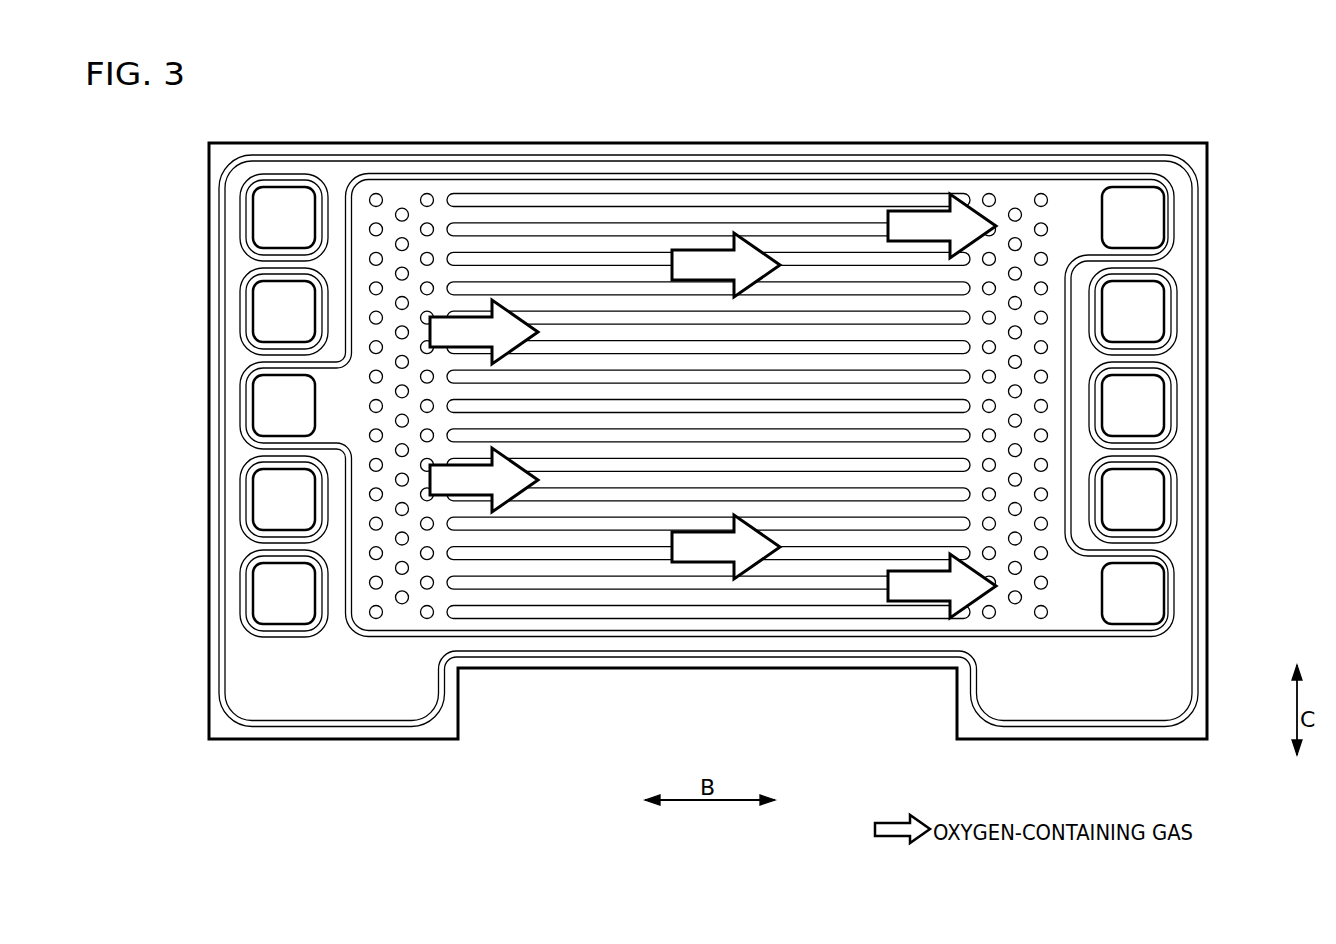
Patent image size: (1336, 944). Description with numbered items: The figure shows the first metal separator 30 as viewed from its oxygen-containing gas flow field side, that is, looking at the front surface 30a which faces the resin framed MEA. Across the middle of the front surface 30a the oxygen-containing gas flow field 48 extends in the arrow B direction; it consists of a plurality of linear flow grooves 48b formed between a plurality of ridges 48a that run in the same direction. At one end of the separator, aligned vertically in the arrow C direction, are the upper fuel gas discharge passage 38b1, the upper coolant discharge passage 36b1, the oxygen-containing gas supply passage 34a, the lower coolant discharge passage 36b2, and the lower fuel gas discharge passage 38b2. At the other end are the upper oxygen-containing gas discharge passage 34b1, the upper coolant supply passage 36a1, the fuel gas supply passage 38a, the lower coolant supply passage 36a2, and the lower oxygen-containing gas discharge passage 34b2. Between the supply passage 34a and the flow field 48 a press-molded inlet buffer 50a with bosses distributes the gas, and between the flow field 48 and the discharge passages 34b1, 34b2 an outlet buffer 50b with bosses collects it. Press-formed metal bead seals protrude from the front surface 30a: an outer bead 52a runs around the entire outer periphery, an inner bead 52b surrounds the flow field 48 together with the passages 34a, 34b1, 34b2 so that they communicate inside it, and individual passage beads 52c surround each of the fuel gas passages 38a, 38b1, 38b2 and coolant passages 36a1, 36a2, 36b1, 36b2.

The first metal separator 30 is at (249, 111).
The front surface 30a is at (977, 193).
The oxygen-containing gas flow field 48 is at (708, 343).
The ridges 48a is at (593, 227).
The linear flow grooves 48b is at (652, 243).
The inlet buffer 50a is at (402, 212).
The outlet buffer 50b is at (1015, 212).
The outer bead 52a is at (805, 650).
The inner bead 52b is at (533, 632).
The passage beads 52c is at (240, 200).
The oxygen-containing gas supply passage 34a is at (267, 398).
The upper oxygen-containing gas discharge passage 34b1 is at (1152, 222).
The lower oxygen-containing gas discharge passage 34b2 is at (1152, 598).
The upper coolant supply passage 36a1 is at (1152, 318).
The lower coolant supply passage 36a2 is at (1152, 510).
The upper coolant discharge passage 36b1 is at (267, 318).
The lower coolant discharge passage 36b2 is at (267, 508).
The fuel gas supply passage 38a is at (1152, 410).
The upper fuel gas discharge passage 38b1 is at (267, 222).
The lower fuel gas discharge passage 38b2 is at (267, 598).